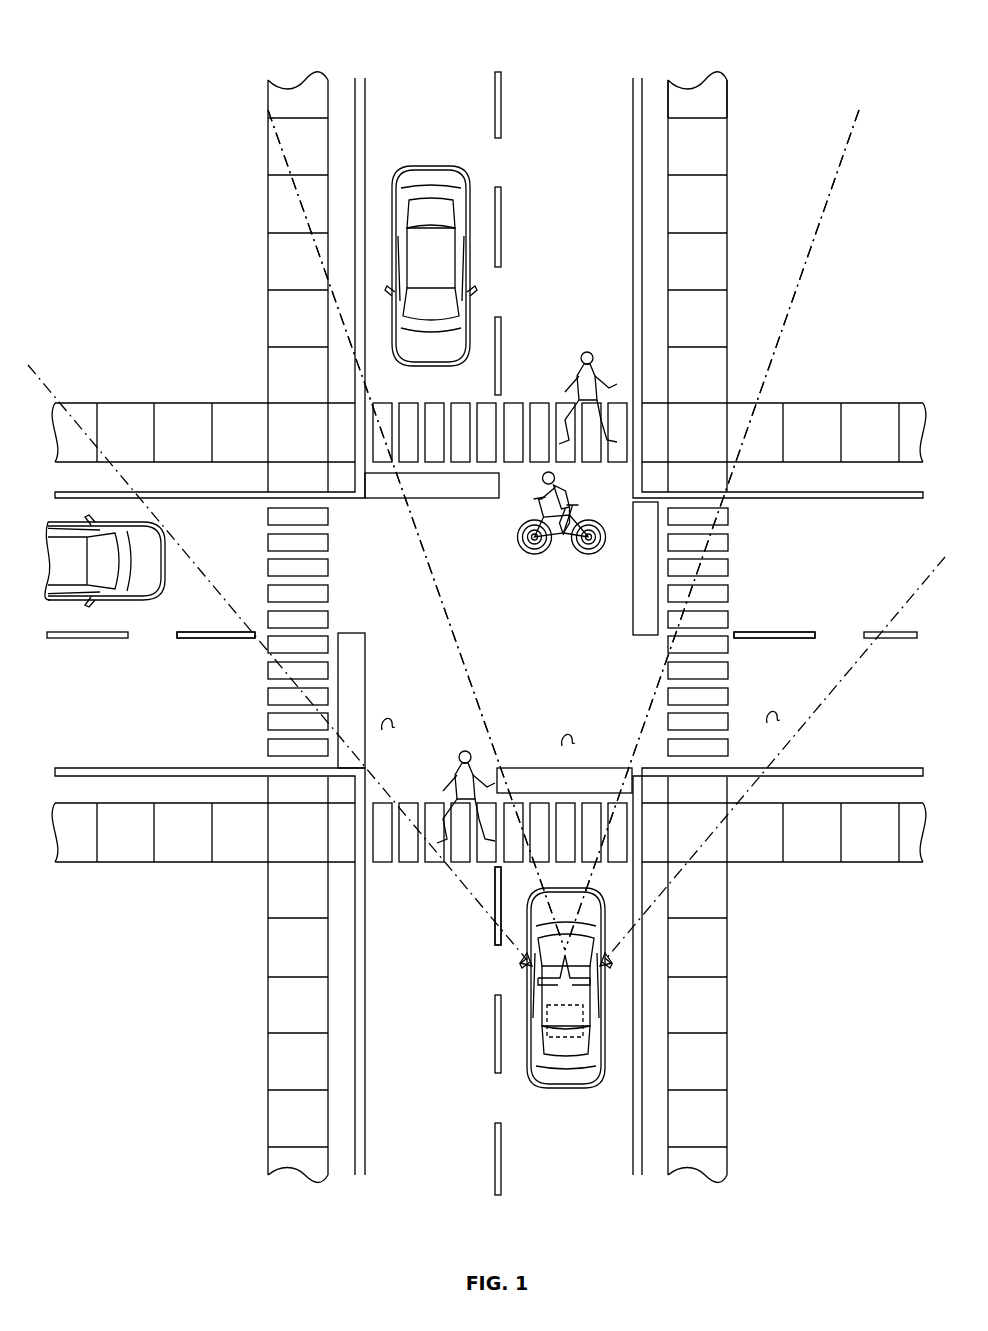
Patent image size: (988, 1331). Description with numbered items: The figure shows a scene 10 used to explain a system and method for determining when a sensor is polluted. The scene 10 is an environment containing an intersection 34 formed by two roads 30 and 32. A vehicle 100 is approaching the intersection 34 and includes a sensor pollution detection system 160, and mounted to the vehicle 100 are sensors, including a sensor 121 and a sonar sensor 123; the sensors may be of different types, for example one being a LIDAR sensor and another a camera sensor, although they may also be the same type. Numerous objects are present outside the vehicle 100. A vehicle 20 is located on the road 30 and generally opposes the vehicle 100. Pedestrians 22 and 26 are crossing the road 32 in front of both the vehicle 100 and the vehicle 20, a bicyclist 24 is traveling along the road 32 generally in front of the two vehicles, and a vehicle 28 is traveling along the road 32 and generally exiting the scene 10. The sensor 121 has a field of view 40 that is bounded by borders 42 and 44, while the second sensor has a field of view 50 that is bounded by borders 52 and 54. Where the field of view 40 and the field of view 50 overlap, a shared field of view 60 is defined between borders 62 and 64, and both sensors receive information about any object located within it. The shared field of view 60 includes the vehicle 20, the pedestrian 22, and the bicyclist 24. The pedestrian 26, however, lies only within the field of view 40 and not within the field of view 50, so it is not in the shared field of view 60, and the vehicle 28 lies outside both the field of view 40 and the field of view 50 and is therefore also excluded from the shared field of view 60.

The scene 10 is at (818, 110).
The vehicle 20 is at (428, 166).
The pedestrian 22 is at (590, 355).
The bicyclist 24 is at (540, 495).
The pedestrian 26 is at (456, 772).
The vehicle 28 is at (120, 600).
The road 30 is at (817, 540).
The road 32 is at (385, 1000).
The intersection 34 is at (405, 580).
The field of view 40 is at (380, 722).
The border 42 is at (245, 645).
The border 44 is at (823, 218).
The field of view 50 is at (770, 715).
The border 52 is at (855, 660).
The border 54 is at (300, 198).
The shared field of view 60 is at (565, 740).
The border 62 is at (466, 672).
The border 64 is at (783, 358).
The vehicle 100 is at (619, 988).
The sensor 121 is at (540, 978).
The sonar sensor 123 is at (600, 985).
The sensor pollution detection system 160 is at (585, 1025).